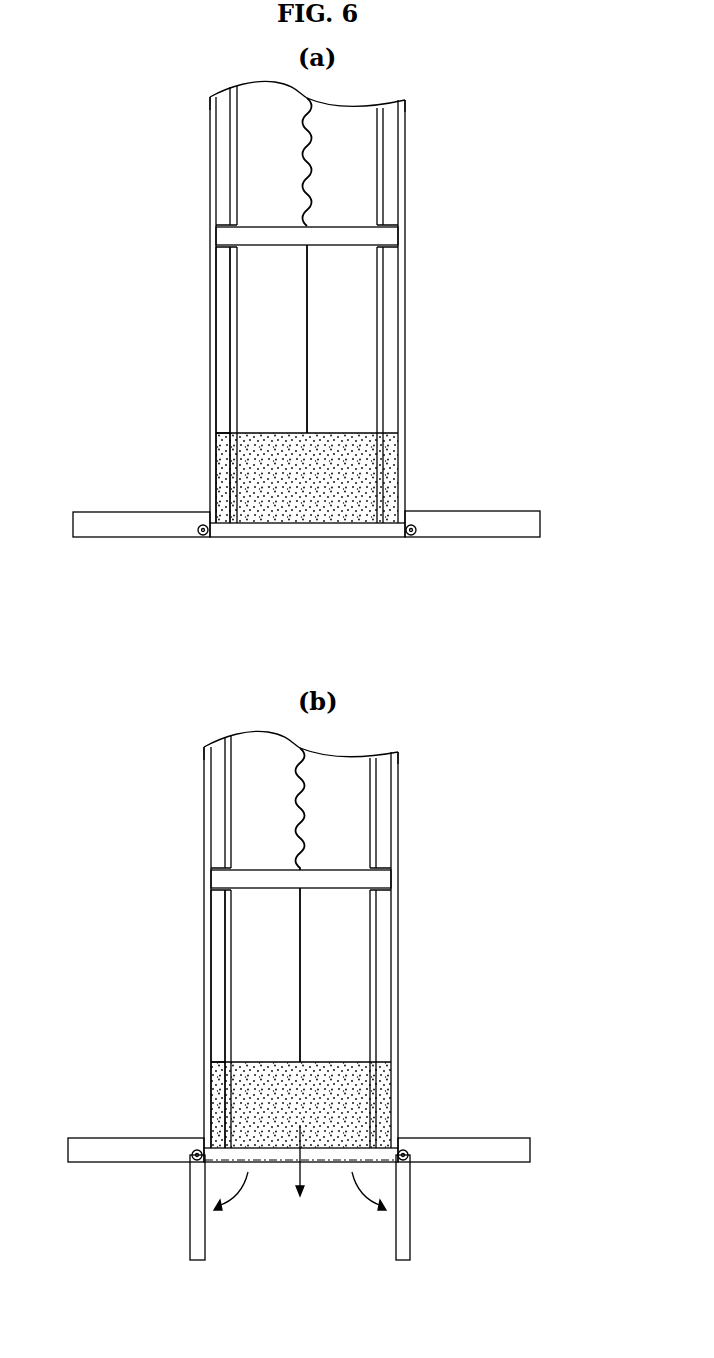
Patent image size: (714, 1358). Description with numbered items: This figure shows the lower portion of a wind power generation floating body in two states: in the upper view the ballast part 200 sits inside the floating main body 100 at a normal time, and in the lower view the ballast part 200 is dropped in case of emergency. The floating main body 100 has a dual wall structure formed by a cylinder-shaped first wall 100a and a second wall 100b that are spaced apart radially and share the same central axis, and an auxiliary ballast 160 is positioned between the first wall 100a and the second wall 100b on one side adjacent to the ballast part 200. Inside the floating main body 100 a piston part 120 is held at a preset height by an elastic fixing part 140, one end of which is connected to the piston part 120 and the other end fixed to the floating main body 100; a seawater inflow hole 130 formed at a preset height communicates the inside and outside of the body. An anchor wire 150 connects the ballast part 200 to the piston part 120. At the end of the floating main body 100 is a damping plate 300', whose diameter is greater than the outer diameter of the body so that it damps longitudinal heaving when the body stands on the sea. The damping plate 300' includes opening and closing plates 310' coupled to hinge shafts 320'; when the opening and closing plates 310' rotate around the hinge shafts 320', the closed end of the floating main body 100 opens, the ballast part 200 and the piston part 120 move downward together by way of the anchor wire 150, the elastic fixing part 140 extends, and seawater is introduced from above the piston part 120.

The floating main body 100 is at (517, 118).
The first wall 100a is at (405, 125).
The second wall 100b is at (383, 170).
The piston part 120 is at (249, 238).
The seawater inflow hole 130 is at (405, 233).
The elastic fixing part 140 is at (300, 176).
The anchor wire 150 is at (309, 334).
The auxiliary ballast 160 is at (228, 458).
The ballast part 200 is at (265, 524).
The damping plate 300' is at (310, 781).
The opening and closing plate 310' is at (246, 891).
The hinge shaft 320' is at (419, 892).